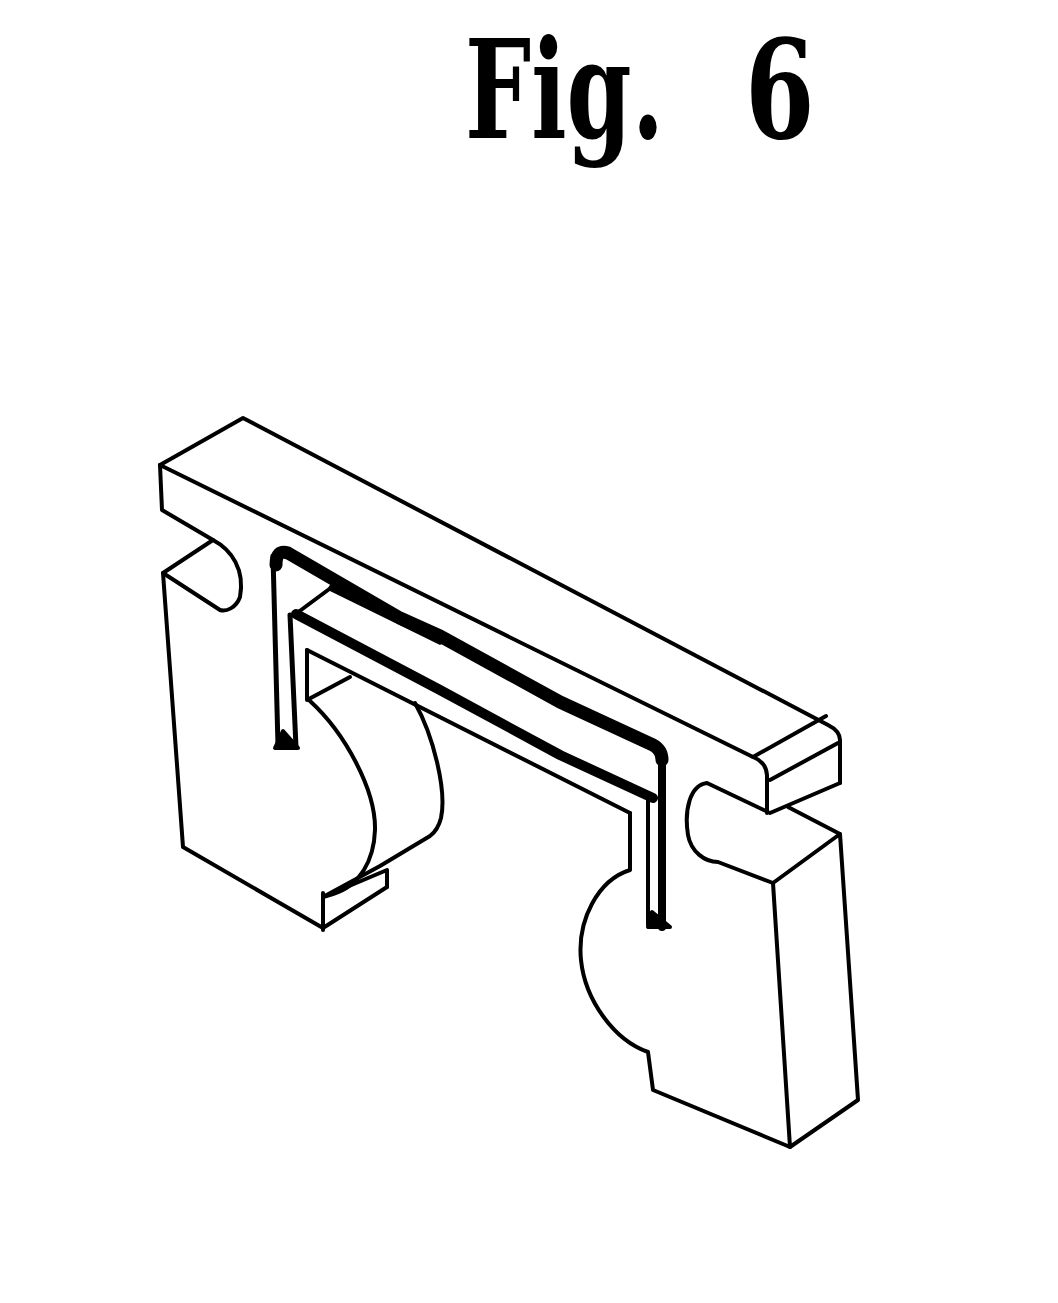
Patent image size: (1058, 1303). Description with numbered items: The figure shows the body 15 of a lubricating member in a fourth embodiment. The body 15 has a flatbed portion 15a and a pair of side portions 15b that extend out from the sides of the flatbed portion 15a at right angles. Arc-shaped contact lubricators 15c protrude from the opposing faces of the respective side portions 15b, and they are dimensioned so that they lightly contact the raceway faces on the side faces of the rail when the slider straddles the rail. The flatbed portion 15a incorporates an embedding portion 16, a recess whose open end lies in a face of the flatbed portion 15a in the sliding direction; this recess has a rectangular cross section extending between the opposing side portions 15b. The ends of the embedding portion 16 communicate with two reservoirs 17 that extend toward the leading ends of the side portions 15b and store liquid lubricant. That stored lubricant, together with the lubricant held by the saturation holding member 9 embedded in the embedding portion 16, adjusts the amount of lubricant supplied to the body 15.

The body 15 is at (183, 419).
The flatbed portion 15a is at (320, 481).
The side portions 15b is at (196, 805).
The contact lubricators 15c is at (357, 856).
The embedding portion 16 is at (428, 643).
The reservoirs 17 is at (280, 708).
The saturation holding member 9 is at (541, 723).